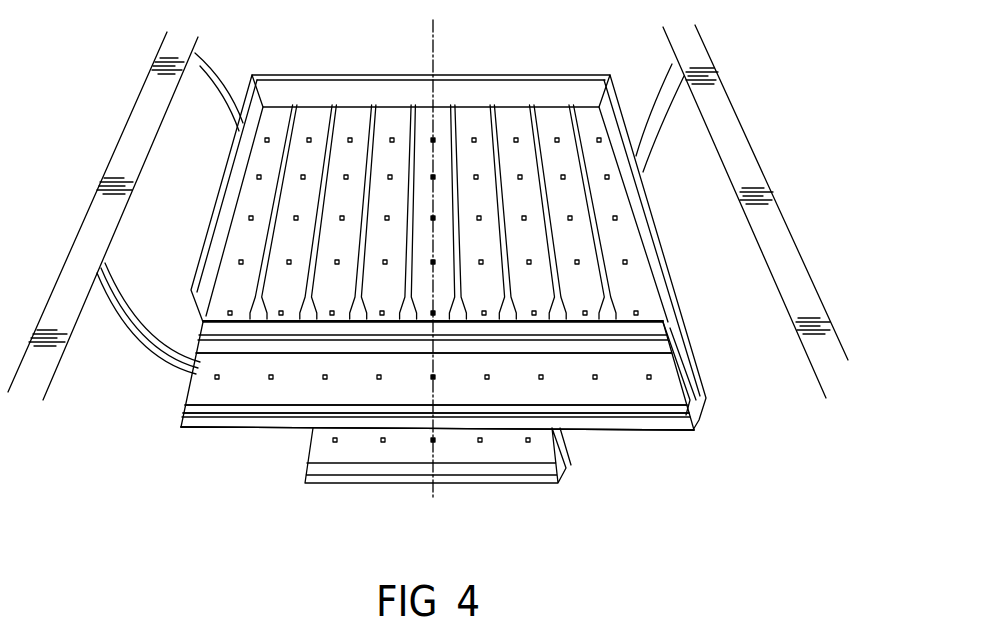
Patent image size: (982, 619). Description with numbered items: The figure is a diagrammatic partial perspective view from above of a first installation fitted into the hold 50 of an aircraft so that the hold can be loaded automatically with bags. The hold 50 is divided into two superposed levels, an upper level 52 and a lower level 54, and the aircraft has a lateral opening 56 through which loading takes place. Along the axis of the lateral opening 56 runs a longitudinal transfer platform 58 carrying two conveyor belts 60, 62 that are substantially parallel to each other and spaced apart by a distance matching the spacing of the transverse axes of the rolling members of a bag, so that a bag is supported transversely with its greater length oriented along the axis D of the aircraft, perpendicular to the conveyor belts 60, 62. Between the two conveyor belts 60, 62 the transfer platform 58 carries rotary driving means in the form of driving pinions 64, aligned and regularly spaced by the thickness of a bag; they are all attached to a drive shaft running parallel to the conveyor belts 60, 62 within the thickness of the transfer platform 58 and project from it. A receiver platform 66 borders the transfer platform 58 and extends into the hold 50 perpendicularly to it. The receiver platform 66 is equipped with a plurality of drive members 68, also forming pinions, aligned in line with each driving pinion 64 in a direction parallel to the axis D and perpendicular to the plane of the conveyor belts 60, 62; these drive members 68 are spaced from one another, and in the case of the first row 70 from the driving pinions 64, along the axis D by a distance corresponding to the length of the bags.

The hold 50 is at (607, 443).
The upper level 52 is at (361, 210).
The lower level 54 is at (497, 452).
The lateral opening 56 is at (178, 381).
The transfer platform 58 is at (258, 428).
The conveyor belt 60 is at (535, 348).
The conveyor belt 62 is at (663, 410).
The driving pinions 64 is at (655, 378).
The receiver platform 66 is at (470, 118).
The drive members 68 is at (326, 316).
The first row 70 is at (657, 316).
The axis of the aircraft D is at (430, 515).